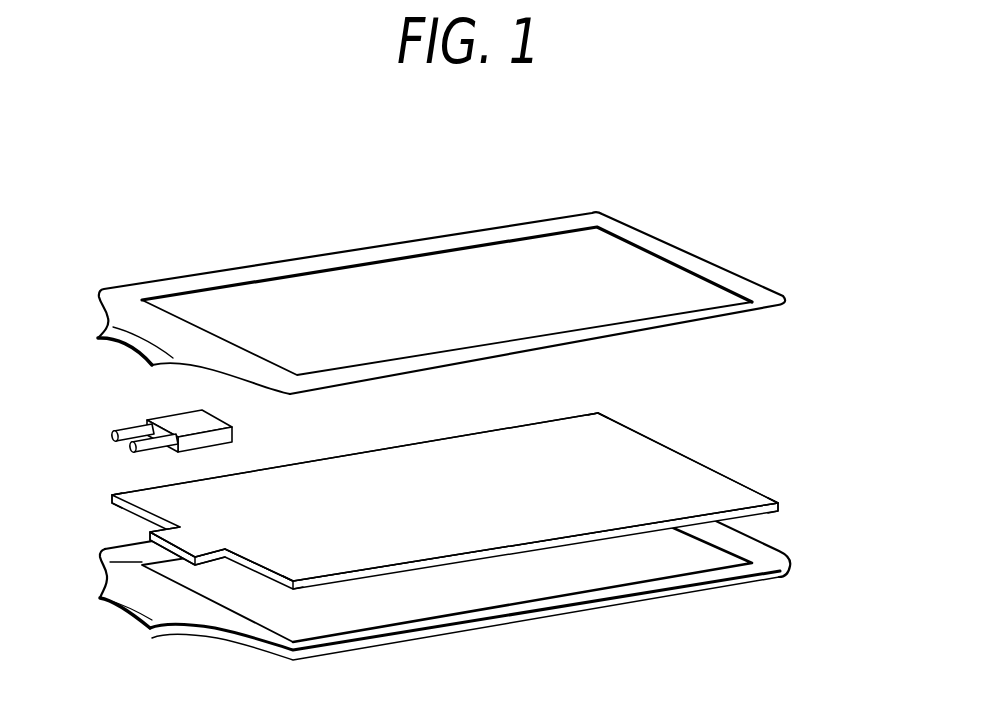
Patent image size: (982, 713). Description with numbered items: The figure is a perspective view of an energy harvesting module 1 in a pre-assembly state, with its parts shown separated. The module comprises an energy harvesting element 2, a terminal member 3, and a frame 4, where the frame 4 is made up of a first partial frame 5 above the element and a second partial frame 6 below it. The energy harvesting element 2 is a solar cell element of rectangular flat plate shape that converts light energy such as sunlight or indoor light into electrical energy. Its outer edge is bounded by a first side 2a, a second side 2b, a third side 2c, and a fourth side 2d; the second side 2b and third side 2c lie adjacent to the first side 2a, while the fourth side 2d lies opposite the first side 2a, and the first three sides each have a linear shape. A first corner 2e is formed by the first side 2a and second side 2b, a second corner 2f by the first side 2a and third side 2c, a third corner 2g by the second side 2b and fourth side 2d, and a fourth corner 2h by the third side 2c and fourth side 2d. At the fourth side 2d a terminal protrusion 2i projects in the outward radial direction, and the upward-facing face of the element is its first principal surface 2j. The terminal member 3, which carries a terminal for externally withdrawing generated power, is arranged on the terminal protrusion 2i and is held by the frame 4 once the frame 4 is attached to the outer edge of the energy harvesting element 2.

The energy harvesting module 1 is at (700, 147).
The energy harvesting element 2 is at (665, 446).
The first side 2a is at (703, 465).
The second side 2b is at (420, 443).
The third side 2c is at (542, 541).
The fourth side 2d is at (243, 556).
The first corner 2e is at (598, 413).
The second corner 2f is at (778, 503).
The third corner 2g is at (112, 495).
The fourth corner 2h is at (295, 582).
The terminal protrusion 2i is at (188, 540).
The first principal surface 2j is at (437, 495).
The terminal member 3 is at (128, 425).
The frame 4 is at (487, 420).
The first partial frame 5 is at (682, 247).
The second partial frame 6 is at (776, 552).